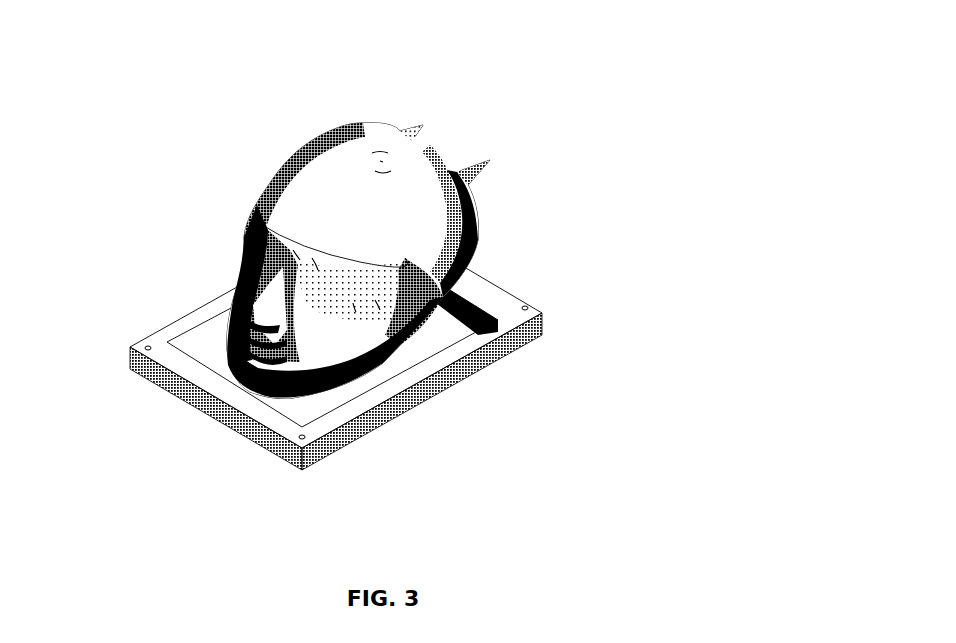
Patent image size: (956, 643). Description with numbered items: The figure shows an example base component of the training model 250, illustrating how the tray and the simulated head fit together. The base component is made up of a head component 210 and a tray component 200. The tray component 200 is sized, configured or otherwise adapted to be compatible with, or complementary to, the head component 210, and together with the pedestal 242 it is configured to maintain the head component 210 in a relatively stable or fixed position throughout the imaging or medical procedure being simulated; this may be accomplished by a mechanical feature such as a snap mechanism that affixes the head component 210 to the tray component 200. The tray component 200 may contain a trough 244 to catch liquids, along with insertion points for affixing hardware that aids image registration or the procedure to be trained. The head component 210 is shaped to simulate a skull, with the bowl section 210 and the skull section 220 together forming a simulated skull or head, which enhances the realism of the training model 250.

The tray component 200 is at (352, 341).
The head component 210 is at (359, 232).
The skull section 220 is at (427, 165).
The pedestal 242 is at (408, 335).
The trough 244 is at (173, 337).
The training model 250 is at (528, 102).